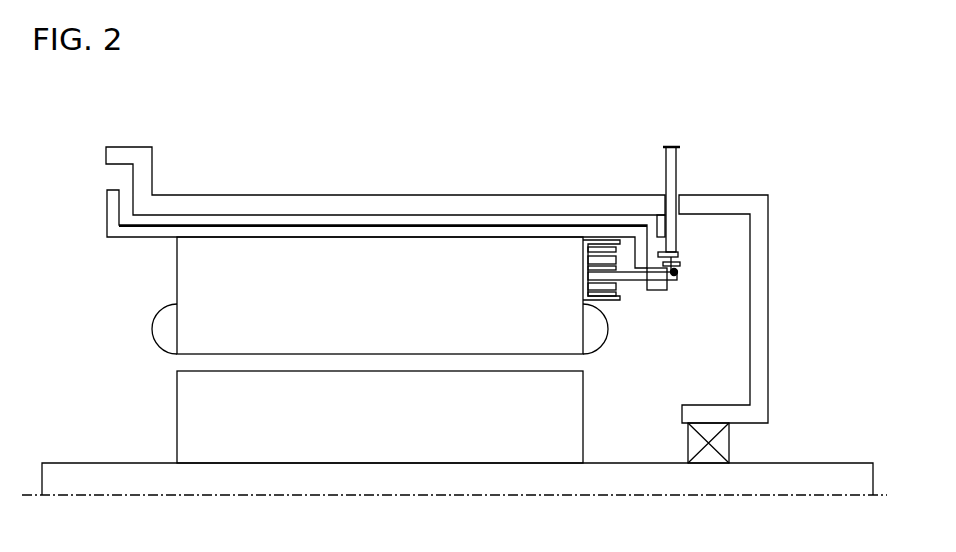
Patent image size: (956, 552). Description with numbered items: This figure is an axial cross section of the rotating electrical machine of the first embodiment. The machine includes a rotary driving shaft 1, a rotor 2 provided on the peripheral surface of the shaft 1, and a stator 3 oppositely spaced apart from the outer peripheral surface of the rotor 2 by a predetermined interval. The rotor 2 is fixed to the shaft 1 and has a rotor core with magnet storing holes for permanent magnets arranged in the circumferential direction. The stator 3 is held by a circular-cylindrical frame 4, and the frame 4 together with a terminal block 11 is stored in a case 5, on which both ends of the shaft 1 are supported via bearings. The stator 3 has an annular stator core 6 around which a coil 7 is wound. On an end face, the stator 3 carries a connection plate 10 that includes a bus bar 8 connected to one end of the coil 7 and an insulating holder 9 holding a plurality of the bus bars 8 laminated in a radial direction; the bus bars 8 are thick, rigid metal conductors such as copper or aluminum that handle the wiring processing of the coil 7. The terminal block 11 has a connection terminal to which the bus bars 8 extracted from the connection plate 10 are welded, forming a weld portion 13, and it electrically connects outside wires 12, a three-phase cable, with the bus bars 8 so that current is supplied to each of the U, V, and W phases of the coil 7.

The shaft 1 is at (66, 463).
The rotor 2 is at (177, 401).
The stator 3 is at (177, 273).
The frame 4 is at (107, 211).
The case 5 is at (106, 151).
The stator core 6 is at (275, 237).
The coil 7 is at (152, 326).
The bus bar 8 is at (602, 247).
The insulating holder 9 is at (598, 253).
The connection plate 10 is at (541, 133).
The terminal block 11 is at (657, 207).
The outside wire 12 is at (677, 172).
The weld portion 13 is at (678, 272).